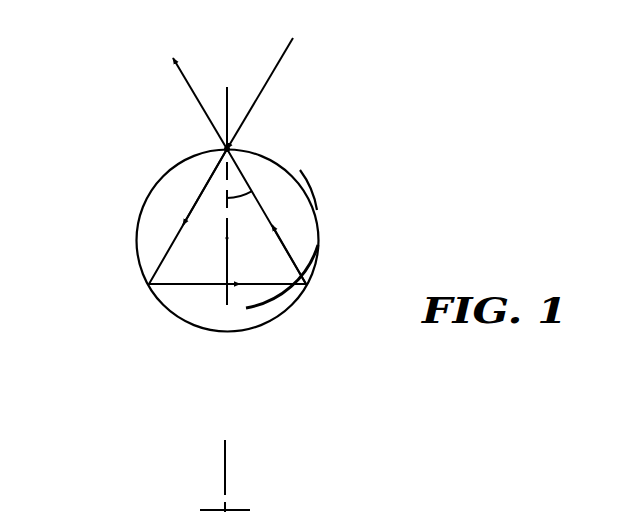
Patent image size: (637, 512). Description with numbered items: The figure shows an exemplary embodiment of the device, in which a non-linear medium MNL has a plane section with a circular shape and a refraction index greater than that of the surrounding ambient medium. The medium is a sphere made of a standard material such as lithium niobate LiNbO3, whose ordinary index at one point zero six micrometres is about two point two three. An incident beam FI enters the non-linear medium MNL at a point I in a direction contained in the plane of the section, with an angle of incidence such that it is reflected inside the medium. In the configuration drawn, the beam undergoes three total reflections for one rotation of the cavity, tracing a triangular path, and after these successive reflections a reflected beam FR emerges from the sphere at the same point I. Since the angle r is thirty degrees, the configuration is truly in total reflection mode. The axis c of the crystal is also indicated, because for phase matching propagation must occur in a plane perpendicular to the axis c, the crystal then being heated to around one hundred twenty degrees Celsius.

The incident beam FI is at (267, 87).
The reflected beam FR is at (203, 112).
The point of entry and exit I is at (230, 148).
The non-linear medium MNL is at (288, 198).
The lithium niobate LiNbO3 is at (150, 238).
The angle r is at (243, 205).
The axis c is at (227, 238).